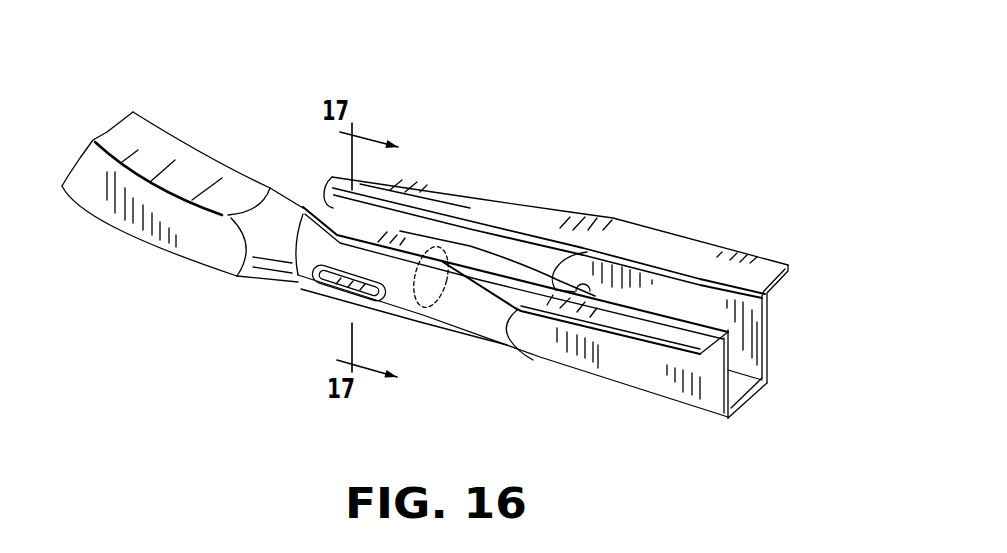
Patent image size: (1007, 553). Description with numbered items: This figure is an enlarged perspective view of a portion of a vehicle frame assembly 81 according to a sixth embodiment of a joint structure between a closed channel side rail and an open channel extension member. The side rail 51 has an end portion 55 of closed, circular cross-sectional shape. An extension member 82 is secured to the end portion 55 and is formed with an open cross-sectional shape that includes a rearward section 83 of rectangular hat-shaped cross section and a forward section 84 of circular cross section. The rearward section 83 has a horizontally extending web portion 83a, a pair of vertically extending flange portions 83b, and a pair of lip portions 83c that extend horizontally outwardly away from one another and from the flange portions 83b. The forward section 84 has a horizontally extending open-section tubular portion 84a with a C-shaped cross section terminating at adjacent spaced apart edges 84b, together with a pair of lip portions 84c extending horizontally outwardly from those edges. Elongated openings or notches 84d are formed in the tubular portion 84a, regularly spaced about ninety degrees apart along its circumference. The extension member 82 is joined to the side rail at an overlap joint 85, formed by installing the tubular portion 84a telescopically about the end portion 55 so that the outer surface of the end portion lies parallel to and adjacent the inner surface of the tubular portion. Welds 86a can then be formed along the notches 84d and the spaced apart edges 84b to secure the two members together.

The side rail 51 is at (153, 146).
The end portion 55 is at (288, 210).
The vehicle frame assembly 81 is at (653, 107).
The extension member 82 is at (590, 206).
The rearward section 83 is at (695, 237).
The web portion 83a is at (752, 402).
The flange portions 83b is at (752, 341).
The lip portions 83c is at (757, 262).
The forward section 84 is at (473, 188).
The open-section tubular portion 84a is at (327, 300).
The spaced apart edges 84b is at (492, 244).
The lip portions 84c is at (425, 192).
The notches 84d is at (327, 298).
The overlap joint 85 is at (403, 165).
The welds 86a is at (370, 290).